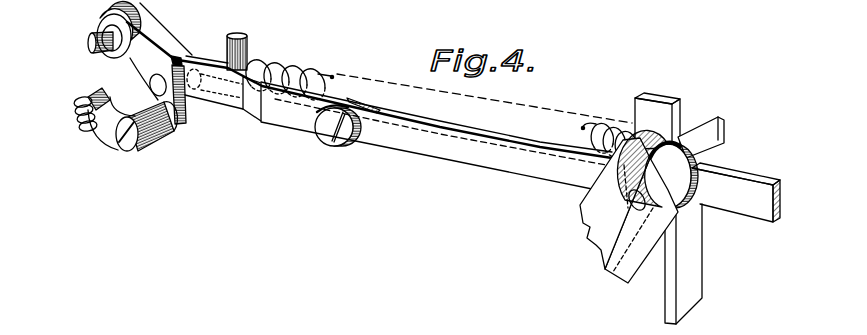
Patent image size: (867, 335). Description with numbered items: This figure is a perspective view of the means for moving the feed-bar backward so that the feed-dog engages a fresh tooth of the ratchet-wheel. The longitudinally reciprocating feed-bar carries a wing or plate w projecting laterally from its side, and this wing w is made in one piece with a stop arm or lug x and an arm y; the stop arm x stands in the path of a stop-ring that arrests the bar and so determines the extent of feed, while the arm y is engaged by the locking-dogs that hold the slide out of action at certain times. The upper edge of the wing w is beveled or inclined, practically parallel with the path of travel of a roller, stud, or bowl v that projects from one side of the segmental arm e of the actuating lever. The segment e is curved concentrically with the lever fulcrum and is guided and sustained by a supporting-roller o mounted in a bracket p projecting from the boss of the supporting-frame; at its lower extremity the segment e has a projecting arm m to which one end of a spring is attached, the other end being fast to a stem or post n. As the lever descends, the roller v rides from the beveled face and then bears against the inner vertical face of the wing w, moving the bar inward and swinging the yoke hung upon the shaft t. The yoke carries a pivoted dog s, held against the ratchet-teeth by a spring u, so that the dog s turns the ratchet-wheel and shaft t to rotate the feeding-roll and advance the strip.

The bracket p is at (170, 36).
The shaft t is at (105, 50).
The dog s is at (110, 137).
The spring u is at (77, 128).
The supporting-roller o is at (280, 113).
The stem or post n is at (313, 72).
The projecting arm m is at (485, 162).
The stop arm or lug x is at (662, 112).
The arm y is at (718, 139).
The roller v is at (682, 157).
The wing w is at (682, 255).
The segmental arm e is at (596, 212).